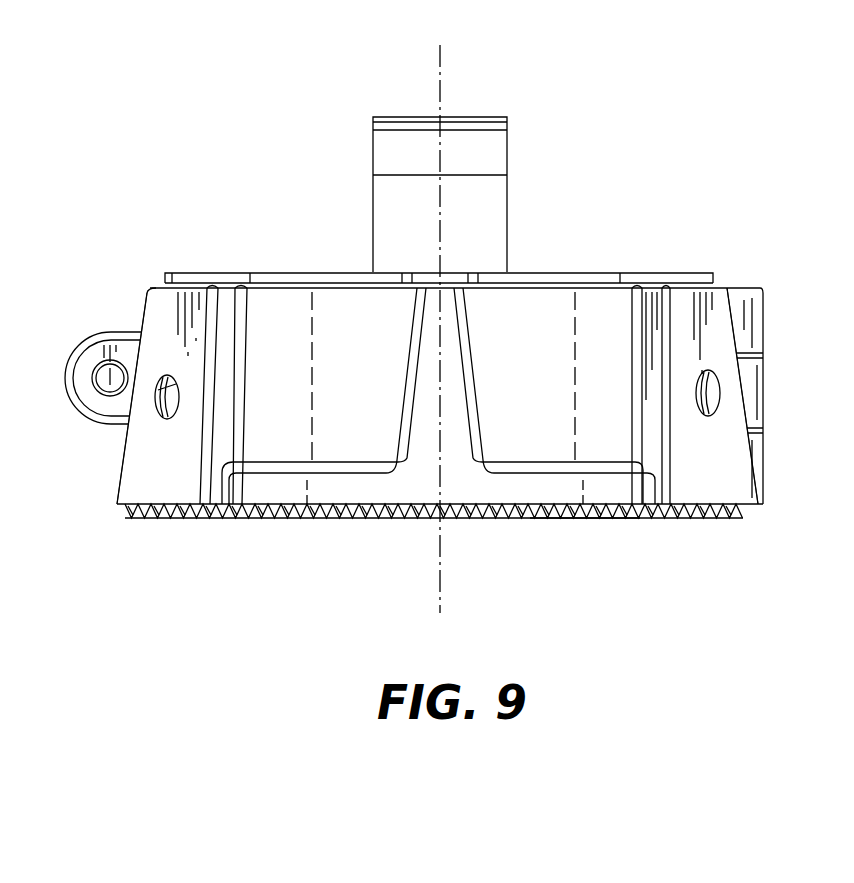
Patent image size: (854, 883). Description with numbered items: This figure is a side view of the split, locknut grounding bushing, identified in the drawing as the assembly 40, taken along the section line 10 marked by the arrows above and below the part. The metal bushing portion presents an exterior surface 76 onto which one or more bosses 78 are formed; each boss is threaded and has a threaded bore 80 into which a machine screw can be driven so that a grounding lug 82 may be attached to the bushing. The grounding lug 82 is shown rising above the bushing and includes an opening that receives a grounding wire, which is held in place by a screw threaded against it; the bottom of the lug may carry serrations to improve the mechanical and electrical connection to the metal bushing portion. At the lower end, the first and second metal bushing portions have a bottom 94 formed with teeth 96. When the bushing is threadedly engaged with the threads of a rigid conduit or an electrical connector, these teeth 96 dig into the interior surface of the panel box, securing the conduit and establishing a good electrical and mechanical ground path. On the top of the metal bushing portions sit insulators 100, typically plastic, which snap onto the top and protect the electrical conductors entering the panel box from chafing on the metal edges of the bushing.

The section line 10- 10 is at (483, 45).
The hub assembly 40 is at (692, 153).
The exterior surface 76 is at (557, 355).
The boss 78 is at (134, 478).
The threaded bore 80 is at (157, 384).
The grounding lug 82 is at (522, 177).
The bottom 94 is at (467, 518).
The teeth 96 is at (625, 518).
The insulator 100 is at (698, 273).